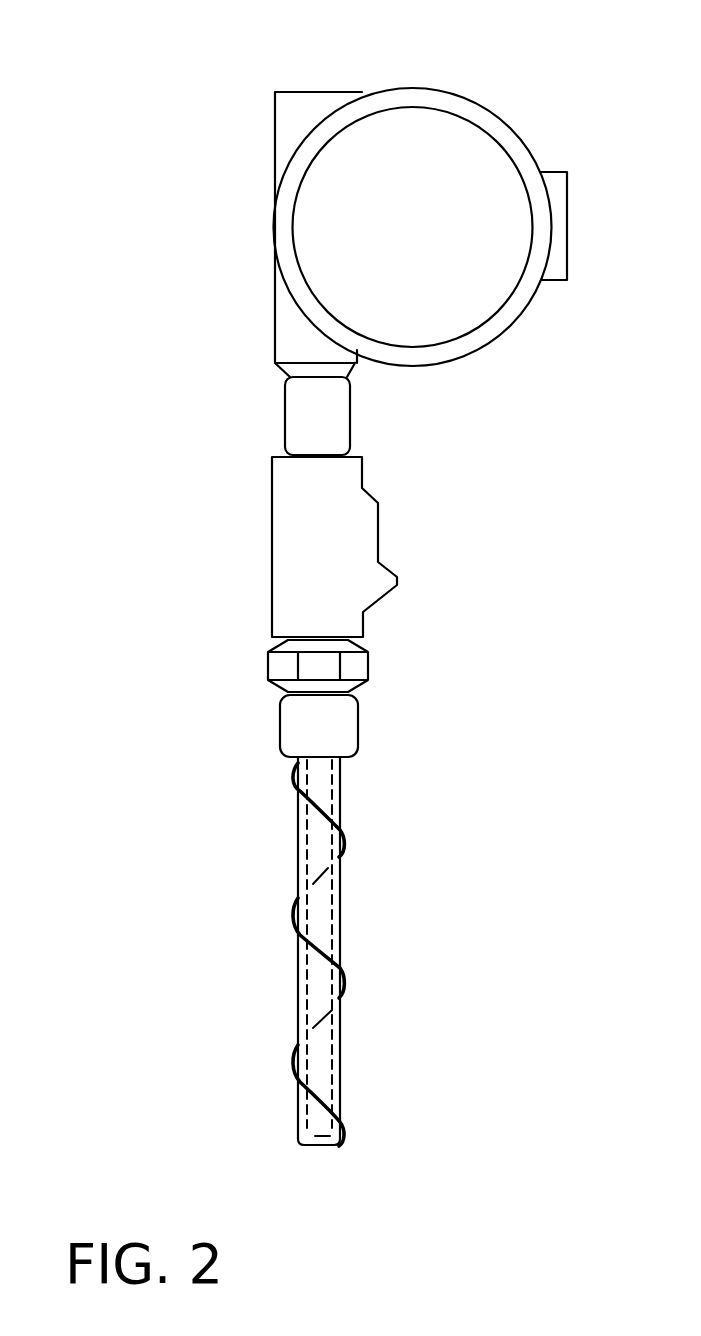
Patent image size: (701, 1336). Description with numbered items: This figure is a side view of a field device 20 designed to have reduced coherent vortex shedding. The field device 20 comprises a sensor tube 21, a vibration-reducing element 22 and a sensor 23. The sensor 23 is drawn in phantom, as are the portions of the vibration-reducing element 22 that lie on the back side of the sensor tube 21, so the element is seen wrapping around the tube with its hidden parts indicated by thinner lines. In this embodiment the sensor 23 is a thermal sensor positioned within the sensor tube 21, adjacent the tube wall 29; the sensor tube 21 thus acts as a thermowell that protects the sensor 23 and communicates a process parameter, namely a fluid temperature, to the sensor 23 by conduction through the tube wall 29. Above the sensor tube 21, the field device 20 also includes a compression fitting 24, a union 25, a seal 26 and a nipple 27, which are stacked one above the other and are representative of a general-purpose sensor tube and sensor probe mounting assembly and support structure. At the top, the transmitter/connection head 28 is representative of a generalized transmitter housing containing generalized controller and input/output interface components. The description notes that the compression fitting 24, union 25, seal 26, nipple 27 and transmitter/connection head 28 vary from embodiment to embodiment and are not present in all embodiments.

The field device 20 is at (120, 97).
The sensor tube 21 is at (275, 848).
The vibration-reducing element 22 is at (343, 838).
The sensor 23 is at (343, 930).
The compression fitting 24 is at (280, 717).
The union 25 is at (370, 661).
The seal 26 is at (272, 538).
The nipple 27 is at (350, 420).
The transmitter/connection head 28 is at (491, 106).
The tube wall 29 is at (342, 1082).